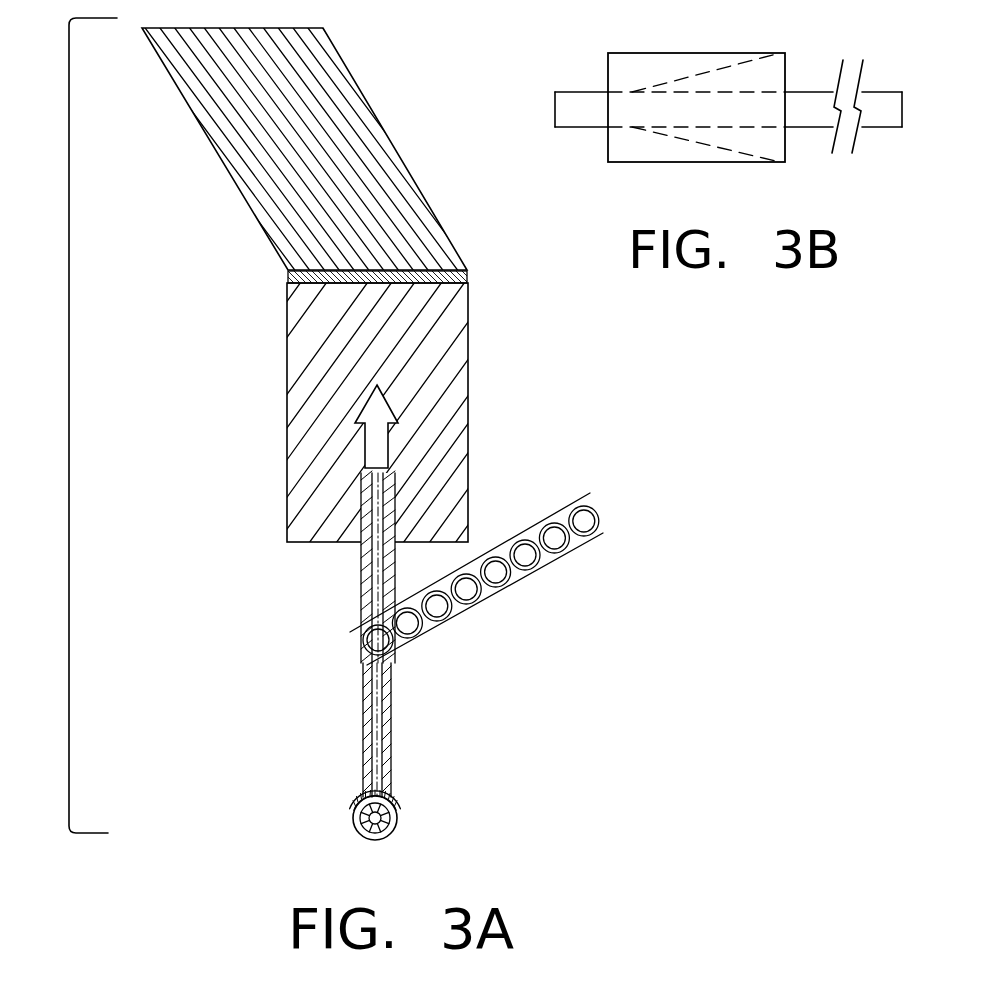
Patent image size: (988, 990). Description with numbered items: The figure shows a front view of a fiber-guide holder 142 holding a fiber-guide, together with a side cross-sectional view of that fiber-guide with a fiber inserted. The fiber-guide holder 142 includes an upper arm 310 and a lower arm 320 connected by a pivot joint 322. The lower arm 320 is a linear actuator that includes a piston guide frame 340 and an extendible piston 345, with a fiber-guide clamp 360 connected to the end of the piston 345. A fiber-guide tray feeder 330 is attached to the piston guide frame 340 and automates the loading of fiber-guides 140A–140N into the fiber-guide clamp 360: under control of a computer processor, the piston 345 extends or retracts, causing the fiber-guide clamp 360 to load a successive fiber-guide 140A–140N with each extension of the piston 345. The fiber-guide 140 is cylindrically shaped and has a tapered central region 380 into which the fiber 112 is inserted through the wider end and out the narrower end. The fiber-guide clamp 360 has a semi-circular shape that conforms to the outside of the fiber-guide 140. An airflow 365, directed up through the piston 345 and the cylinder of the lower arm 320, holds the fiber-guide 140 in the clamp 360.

In FIG. 3A, the fiber-guide holder 142 is at (69, 427).
In FIG. 3A, the upper arm 310 is at (378, 117).
In FIG. 3A, the pivot joint 322 is at (469, 273).
In FIG. 3A, the lower arm 320 is at (470, 335).
In FIG. 3A, the airflow 365 is at (388, 442).
In FIG. 3A, the piston guide frame 340 is at (360, 567).
In FIG. 3A, the extendible piston 345 is at (389, 738).
In FIG. 3A, the fiber-guide tray feeder 330 is at (502, 543).
In FIG. 3A, the fiber-guide 140N is at (590, 540).
In FIG. 3A, the fiber-guide 140A is at (392, 651).
In FIG. 3A, the fiber-guide clamp 360 is at (397, 806).
In FIG. 3A, the fiber-guide 140 is at (360, 836).
In FIG. 3B, the fiber-guide 140 is at (657, 163).
In FIG. 3B, the tapered central region 380 is at (699, 143).
In FIG. 3B, the fiber 112 is at (804, 130).